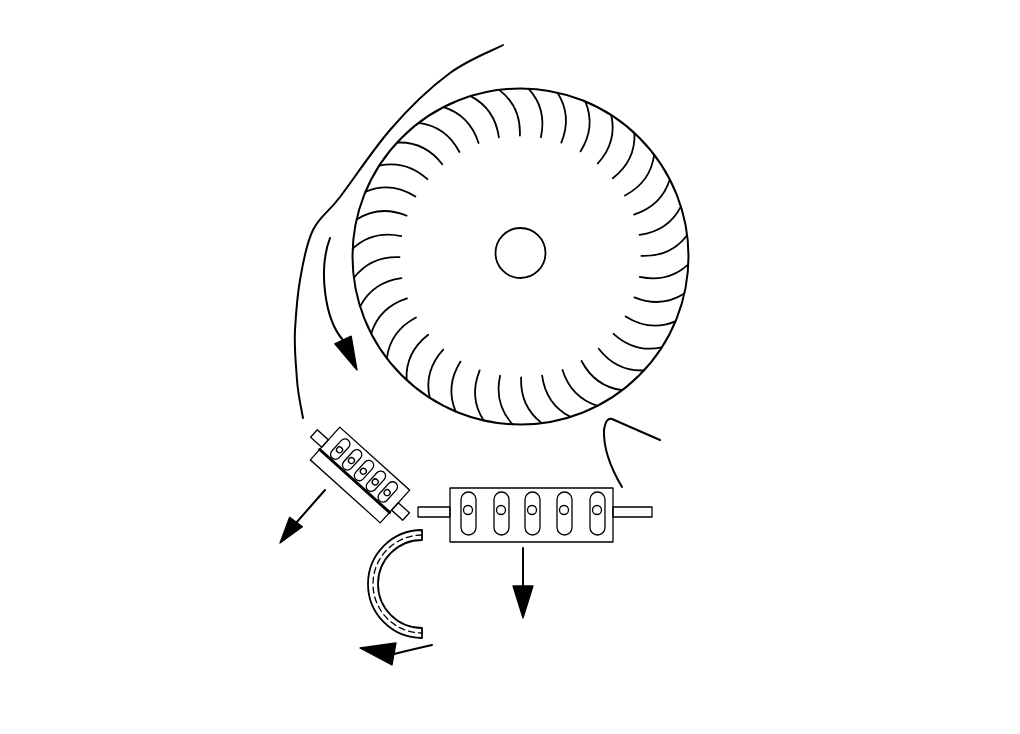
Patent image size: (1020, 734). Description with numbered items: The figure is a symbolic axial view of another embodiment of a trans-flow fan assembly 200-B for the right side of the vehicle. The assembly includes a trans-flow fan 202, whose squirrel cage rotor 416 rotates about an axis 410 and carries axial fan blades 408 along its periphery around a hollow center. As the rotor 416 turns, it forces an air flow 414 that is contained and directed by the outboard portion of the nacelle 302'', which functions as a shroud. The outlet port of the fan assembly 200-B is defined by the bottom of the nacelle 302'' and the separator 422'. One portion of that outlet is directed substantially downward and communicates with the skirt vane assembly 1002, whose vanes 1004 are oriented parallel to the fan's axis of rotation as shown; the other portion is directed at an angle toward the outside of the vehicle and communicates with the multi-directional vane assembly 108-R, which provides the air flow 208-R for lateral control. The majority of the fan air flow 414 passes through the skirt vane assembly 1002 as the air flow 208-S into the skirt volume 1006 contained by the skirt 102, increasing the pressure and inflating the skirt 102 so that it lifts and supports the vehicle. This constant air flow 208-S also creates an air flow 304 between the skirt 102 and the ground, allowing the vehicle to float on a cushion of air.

The trans-flow fan assembly 200-B is at (186, 72).
The trans-flow fan 202 is at (826, 135).
The rotor 416 is at (657, 158).
The axial fan blades 408 is at (594, 166).
The axis 410 is at (521, 279).
The air flow 414 is at (323, 288).
The nacelle 302'' is at (343, 231).
The separator 422' is at (663, 422).
The multi-directional vane assembly 108-R is at (418, 452).
The air flow 208-R is at (306, 510).
The skirt vane assembly 1002 is at (652, 512).
The vanes 1004 is at (606, 528).
The air flow 208-S is at (523, 566).
The skirt volume 1006 is at (480, 598).
The skirt 102 is at (368, 588).
The air flow 304 is at (393, 653).